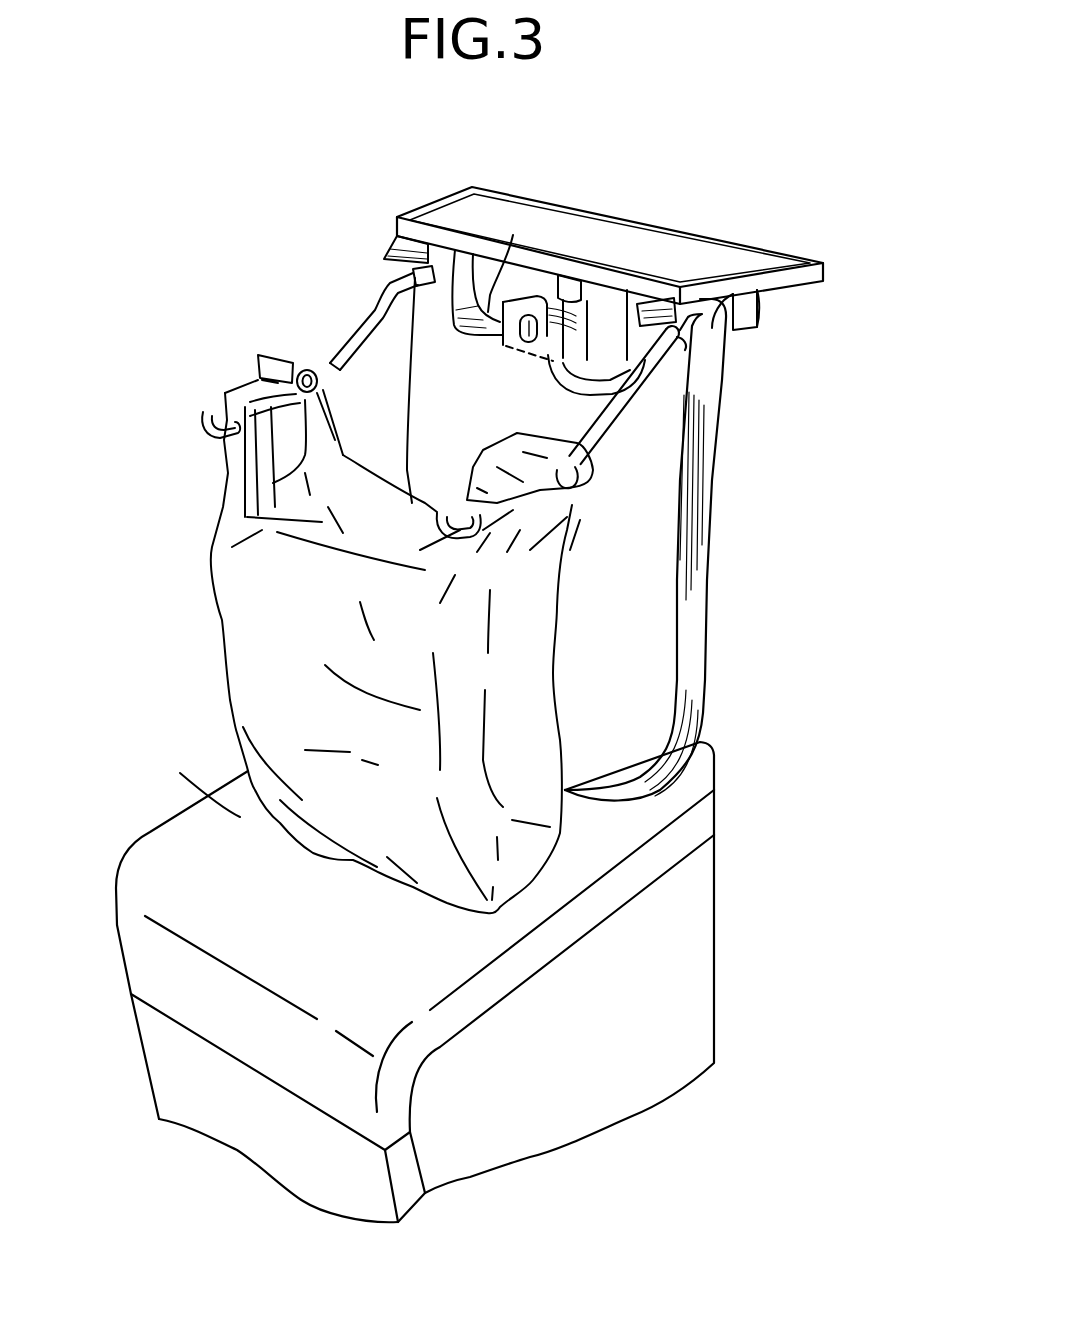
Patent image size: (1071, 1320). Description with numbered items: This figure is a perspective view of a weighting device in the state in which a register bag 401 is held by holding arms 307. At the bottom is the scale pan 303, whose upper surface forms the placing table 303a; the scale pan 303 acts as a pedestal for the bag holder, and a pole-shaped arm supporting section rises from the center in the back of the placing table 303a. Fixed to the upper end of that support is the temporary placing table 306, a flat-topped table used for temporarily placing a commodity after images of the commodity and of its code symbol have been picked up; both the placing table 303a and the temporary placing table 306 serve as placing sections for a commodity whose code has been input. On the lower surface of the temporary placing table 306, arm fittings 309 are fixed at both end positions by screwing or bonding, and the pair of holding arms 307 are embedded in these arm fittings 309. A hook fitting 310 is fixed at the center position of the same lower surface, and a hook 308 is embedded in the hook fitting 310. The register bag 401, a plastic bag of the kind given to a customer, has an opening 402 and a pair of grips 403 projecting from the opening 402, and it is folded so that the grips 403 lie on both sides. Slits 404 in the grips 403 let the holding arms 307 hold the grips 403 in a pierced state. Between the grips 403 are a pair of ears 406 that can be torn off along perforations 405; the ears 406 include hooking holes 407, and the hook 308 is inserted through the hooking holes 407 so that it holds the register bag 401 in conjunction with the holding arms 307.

The scale pan 303 is at (243, 810).
The placing table 303a is at (230, 853).
The temporary placing table 306 is at (678, 242).
The holding arms 307 is at (612, 438).
The hook 308 is at (513, 235).
The arm fittings 309 is at (740, 313).
The hook fitting 310 is at (605, 275).
The register bag 401 is at (253, 693).
The opening 402 is at (230, 580).
The grips 403 is at (454, 265).
The slits 404 is at (400, 233).
The perforations 405 is at (575, 401).
The ears 406 is at (545, 302).
The hooking holes 407 is at (537, 335).